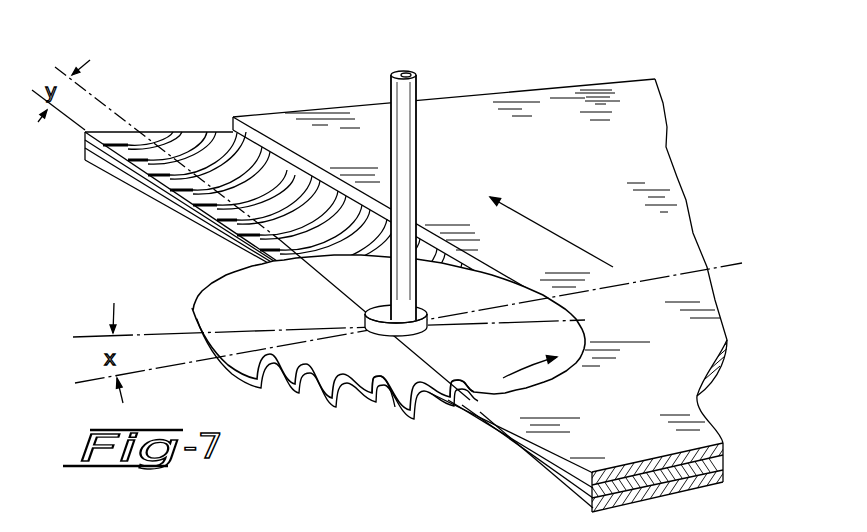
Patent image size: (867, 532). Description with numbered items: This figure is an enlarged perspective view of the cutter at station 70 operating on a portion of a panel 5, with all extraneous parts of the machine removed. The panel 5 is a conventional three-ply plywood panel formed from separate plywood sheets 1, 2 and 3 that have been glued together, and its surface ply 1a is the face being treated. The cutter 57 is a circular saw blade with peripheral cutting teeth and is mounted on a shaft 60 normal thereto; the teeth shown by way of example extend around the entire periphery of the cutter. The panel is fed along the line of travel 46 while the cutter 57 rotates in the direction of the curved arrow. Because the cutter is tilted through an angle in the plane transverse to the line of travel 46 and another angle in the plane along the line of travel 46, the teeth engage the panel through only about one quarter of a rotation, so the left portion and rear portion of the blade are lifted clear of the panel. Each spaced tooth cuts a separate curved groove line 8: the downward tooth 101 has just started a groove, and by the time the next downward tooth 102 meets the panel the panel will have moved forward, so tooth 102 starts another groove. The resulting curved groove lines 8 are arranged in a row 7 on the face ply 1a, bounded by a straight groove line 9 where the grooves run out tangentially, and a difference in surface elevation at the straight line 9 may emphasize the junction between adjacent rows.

The plywood sheet 1 is at (723, 446).
The plywood sheet 2 is at (723, 456).
The plywood sheet 3 is at (723, 472).
The plywood panel 5 is at (712, 408).
The row 7 is at (160, 131).
The curved groove line 8 is at (217, 140).
The straight groove line 9 is at (260, 130).
The surface ply 1a is at (138, 173).
The line of travel 46 is at (538, 221).
The cutter 57 is at (215, 292).
The shaft 60 is at (417, 157).
The station 70 is at (420, 62).
The downward tooth 101 is at (470, 420).
The downward tooth 102 is at (412, 418).